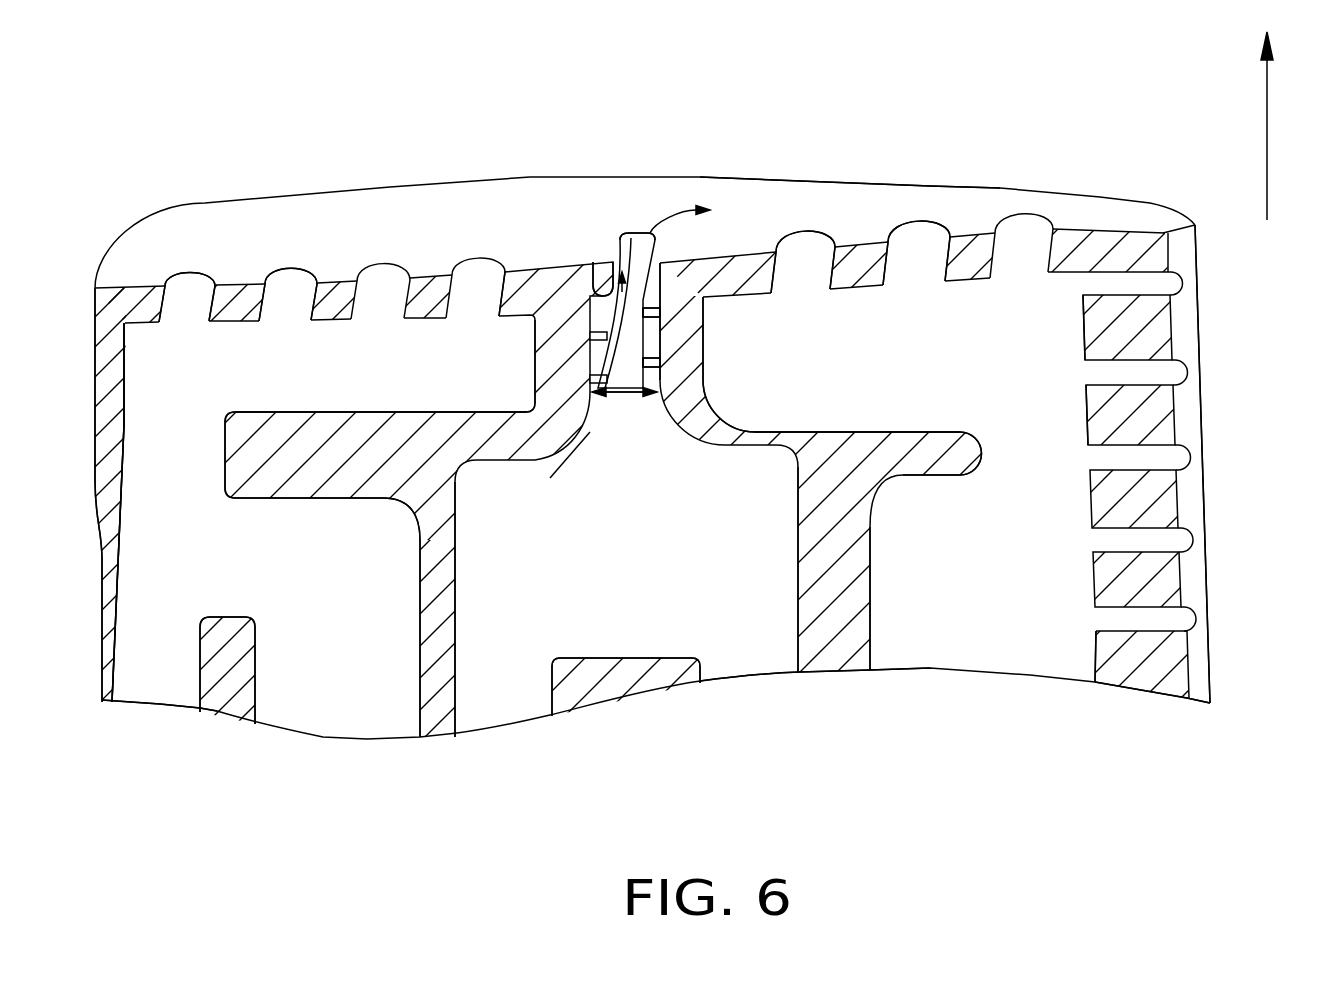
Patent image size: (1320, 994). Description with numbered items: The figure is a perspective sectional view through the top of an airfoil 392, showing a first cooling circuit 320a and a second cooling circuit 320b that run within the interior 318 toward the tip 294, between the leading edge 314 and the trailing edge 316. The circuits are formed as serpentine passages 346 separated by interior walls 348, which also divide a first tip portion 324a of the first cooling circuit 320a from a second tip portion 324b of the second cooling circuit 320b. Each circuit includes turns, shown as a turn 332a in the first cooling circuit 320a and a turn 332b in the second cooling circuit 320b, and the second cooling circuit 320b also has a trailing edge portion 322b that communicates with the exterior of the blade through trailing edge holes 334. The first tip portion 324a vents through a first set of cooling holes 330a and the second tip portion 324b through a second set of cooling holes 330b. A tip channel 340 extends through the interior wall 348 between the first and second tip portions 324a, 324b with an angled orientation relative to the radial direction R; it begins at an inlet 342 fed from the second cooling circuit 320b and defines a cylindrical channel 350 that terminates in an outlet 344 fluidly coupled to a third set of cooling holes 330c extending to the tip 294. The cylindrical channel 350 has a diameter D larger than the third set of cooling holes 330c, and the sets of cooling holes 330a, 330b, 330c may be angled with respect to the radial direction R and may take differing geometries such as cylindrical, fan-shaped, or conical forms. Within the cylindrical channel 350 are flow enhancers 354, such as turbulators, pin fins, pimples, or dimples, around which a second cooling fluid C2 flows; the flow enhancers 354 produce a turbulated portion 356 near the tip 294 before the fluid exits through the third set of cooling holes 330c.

The tip 294 is at (398, 203).
The leading edge 314 is at (95, 440).
The trailing edge 316 is at (1190, 498).
The interior 318 is at (773, 628).
The first cooling circuit 320a is at (153, 612).
The second cooling circuit 320b is at (1045, 627).
The trailing edge portion 322b is at (1008, 594).
The first tip portion 324a is at (351, 381).
The second tip portion 324b is at (945, 372).
The first set of cooling holes 330a is at (290, 283).
The second set of cooling holes 330b is at (917, 235).
The third set of cooling holes 330c is at (642, 233).
The turn 332a is at (316, 596).
The turn 332b is at (626, 602).
The trailing edge hole 334 is at (1188, 614).
The tip channel 340 is at (668, 290).
The inlet 342 is at (623, 420).
The outlet 344 is at (600, 290).
The serpentine passages 346 is at (1042, 390).
The interior wall 348 is at (364, 474).
The cylindrical channel 350 is at (628, 236).
The flow enhancer 354 is at (652, 313).
The turbulated portion 356 is at (675, 207).
The airfoil 392 is at (930, 183).
The diameter D is at (624, 397).
The second cooling fluid C2 is at (568, 458).
The radial direction R is at (1267, 148).